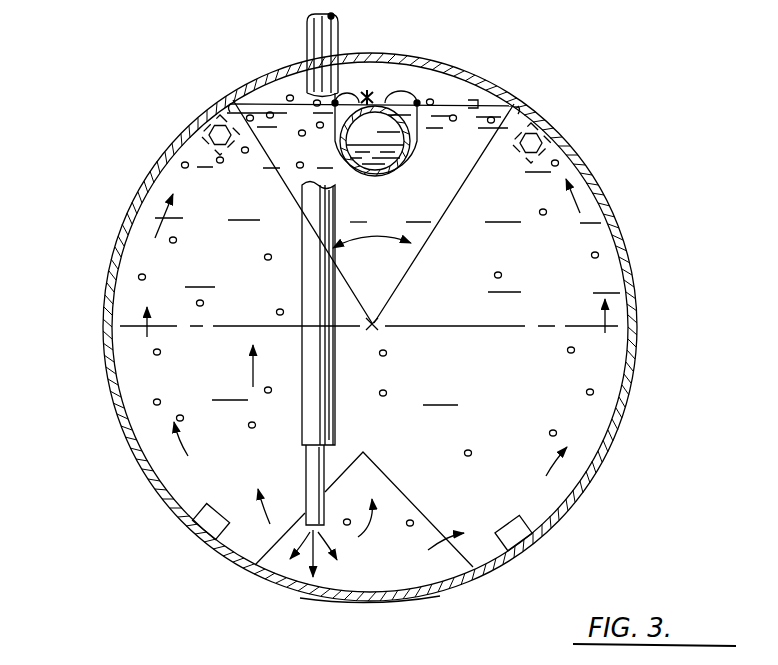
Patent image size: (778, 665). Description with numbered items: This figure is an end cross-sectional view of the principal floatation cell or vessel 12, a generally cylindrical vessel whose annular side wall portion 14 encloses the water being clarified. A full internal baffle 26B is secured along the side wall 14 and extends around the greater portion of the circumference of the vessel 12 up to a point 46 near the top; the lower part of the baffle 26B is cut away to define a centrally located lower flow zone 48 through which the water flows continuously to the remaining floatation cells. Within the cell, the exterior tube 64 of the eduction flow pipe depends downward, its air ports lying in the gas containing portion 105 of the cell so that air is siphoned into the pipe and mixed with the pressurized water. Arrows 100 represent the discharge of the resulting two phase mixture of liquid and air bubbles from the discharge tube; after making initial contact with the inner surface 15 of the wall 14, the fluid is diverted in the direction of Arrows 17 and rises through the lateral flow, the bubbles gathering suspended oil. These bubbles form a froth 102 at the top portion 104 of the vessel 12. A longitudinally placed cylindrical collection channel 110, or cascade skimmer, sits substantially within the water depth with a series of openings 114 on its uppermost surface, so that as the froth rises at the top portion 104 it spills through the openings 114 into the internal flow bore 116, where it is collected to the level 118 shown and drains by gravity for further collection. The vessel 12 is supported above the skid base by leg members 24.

The principal floatation cell or vessel 12 is at (138, 126).
The annular side wall portion 14 is at (110, 398).
The inner surface of wall 15 is at (327, 573).
The Arrows 17 is at (187, 448).
The leg members 24 is at (153, 248).
The baffle 26B is at (601, 272).
The point 46 is at (230, 100).
The lower flow zone 48 is at (400, 570).
The exterior tube 64 is at (310, 282).
The Arrows 100 is at (302, 538).
The froth 102 is at (518, 106).
The top portion 104 is at (360, 95).
The gas containing portion 105 is at (288, 80).
The cylindrical collection channel 110 is at (387, 173).
The openings 114 is at (375, 96).
The internal flow bore 116 is at (405, 147).
The level 118 is at (470, 102).